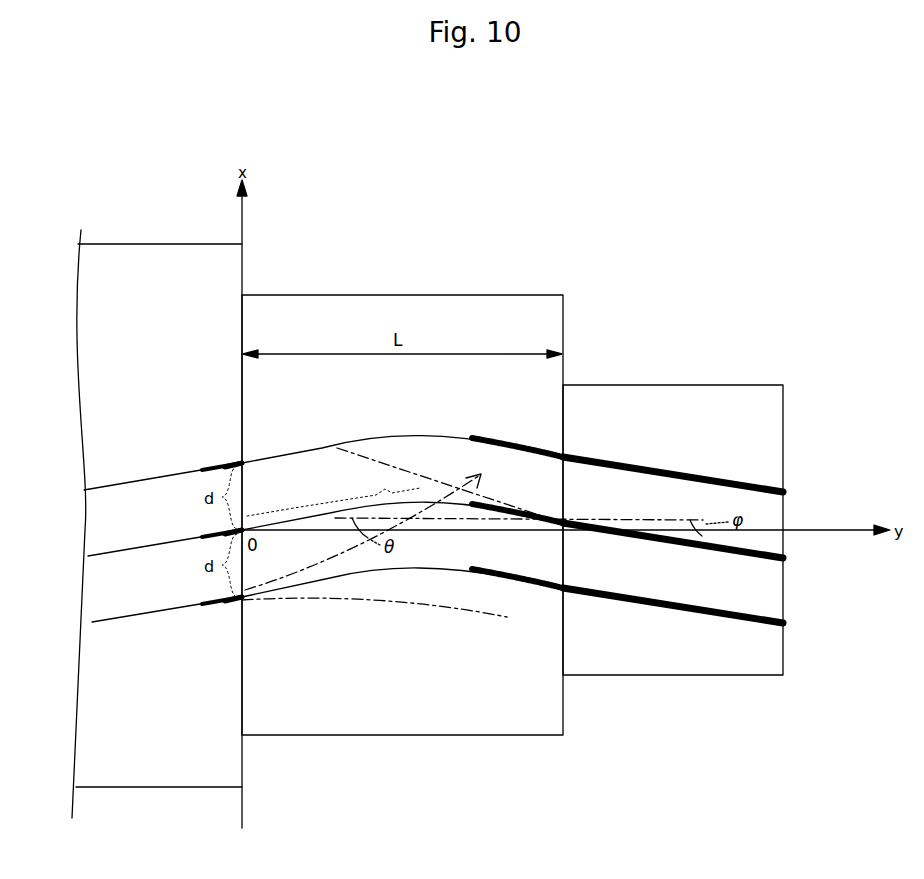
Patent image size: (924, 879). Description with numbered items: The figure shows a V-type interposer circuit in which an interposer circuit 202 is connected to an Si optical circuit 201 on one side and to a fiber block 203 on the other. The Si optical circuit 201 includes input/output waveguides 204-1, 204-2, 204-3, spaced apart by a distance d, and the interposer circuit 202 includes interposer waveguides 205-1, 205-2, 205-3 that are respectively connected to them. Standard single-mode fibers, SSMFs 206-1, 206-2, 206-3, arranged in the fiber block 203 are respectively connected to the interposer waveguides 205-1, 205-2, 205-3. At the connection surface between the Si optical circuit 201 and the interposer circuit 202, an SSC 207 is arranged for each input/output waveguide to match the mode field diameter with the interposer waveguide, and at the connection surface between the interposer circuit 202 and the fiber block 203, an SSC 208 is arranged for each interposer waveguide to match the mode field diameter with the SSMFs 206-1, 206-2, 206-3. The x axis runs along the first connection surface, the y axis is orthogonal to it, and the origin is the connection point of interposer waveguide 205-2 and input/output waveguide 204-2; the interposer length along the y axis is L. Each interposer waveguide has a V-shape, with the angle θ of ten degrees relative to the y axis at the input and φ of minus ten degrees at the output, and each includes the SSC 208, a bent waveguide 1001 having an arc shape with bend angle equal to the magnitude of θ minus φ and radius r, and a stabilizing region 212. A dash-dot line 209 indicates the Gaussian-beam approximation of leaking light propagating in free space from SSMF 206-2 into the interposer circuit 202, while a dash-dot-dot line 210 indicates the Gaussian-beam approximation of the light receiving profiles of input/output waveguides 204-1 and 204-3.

The Si optical circuit 201 is at (147, 254).
The interposer circuit 202 is at (408, 300).
The fiber block 203 is at (690, 395).
The input/output waveguide 204-1 is at (173, 473).
The input/output waveguide 204-2 is at (173, 540).
The input/output waveguide 204-3 is at (173, 606).
The interposer waveguide 205-1 is at (410, 432).
The interposer waveguide 205-2 is at (452, 506).
The interposer waveguide 205-3 is at (428, 569).
The SSMF 206-1 is at (731, 484).
The SSMF 206-2 is at (729, 562).
The SSMF 206-3 is at (729, 628).
The SSC 207 is at (230, 462).
The SSC 208 is at (540, 450).
The dash-dot line 209 is at (337, 444).
The dash-dot-dot line 210 is at (394, 606).
The stabilizing region 212 is at (330, 500).
The bent waveguide 1001 is at (424, 490).